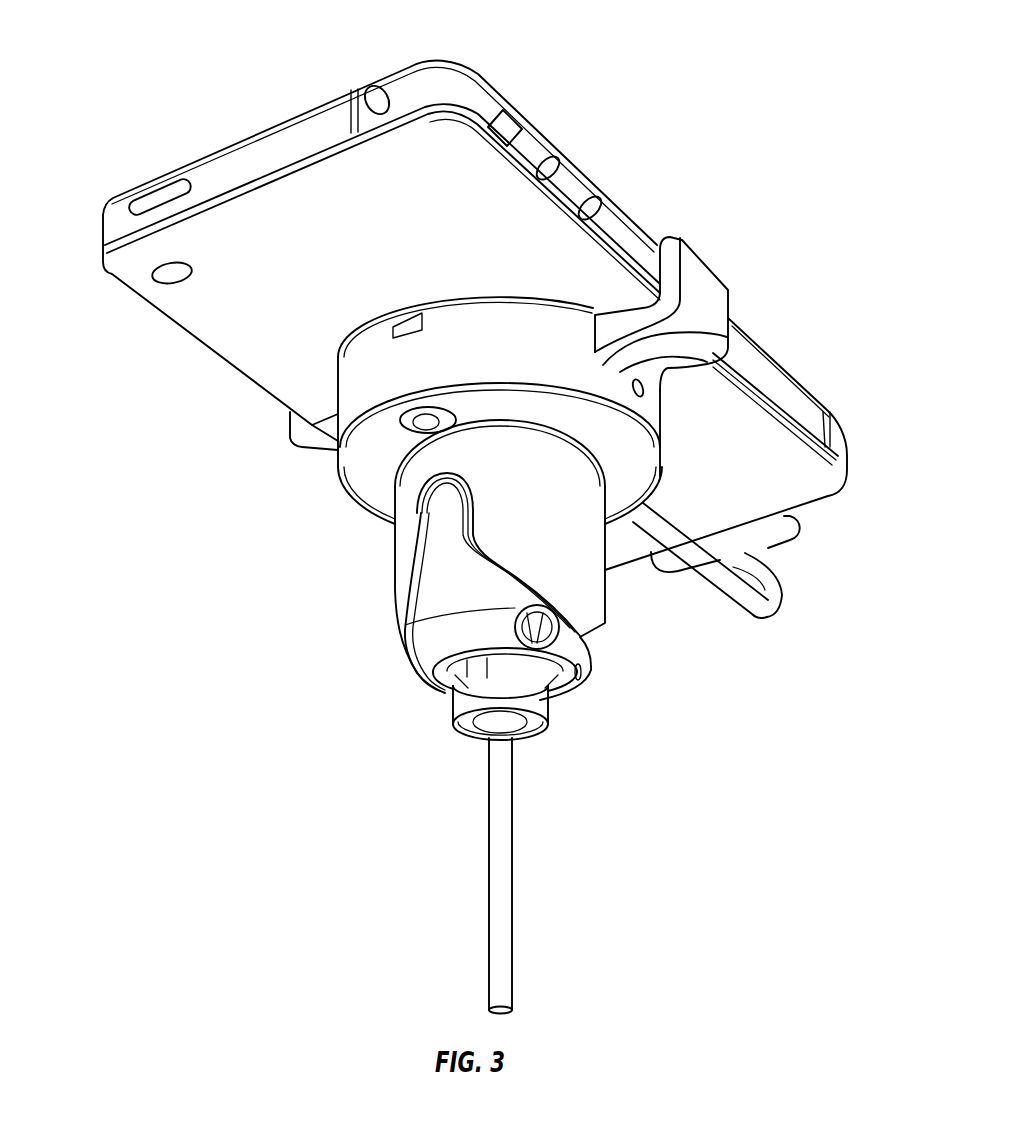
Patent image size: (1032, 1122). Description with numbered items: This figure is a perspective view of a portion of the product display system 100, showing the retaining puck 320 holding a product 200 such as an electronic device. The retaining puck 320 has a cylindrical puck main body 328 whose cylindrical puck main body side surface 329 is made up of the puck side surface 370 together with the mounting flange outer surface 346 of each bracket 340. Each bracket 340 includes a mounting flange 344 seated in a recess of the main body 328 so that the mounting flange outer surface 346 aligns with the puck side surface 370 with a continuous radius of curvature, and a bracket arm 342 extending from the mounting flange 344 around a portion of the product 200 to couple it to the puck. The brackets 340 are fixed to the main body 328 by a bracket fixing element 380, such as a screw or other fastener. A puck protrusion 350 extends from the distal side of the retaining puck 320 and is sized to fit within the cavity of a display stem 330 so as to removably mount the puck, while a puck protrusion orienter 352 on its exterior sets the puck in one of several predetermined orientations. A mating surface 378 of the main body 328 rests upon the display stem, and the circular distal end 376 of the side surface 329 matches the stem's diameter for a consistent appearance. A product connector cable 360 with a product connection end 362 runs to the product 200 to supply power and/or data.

The mobile device mounting system 100 is at (786, 158).
The product 200 is at (450, 90).
The retaining puck 320 is at (293, 480).
The puck main body 328 is at (357, 407).
The puck main body side surface 329 is at (470, 355).
The shaft 330 is at (503, 837).
The bracket 340 is at (710, 297).
The bracket arm 342 is at (690, 267).
The mounting flange 344 is at (730, 327).
The mounting flange outer surface 346 is at (715, 369).
The puck protrusion 350 is at (592, 590).
The puck protrusion orienter 352 is at (423, 535).
The product connector cable 360 is at (767, 617).
The product connection end 362 is at (787, 532).
The puck side surface 370 is at (513, 363).
The distal end 376 is at (360, 487).
The mating surface 378 is at (492, 410).
The bracket fixing element 380 is at (647, 387).